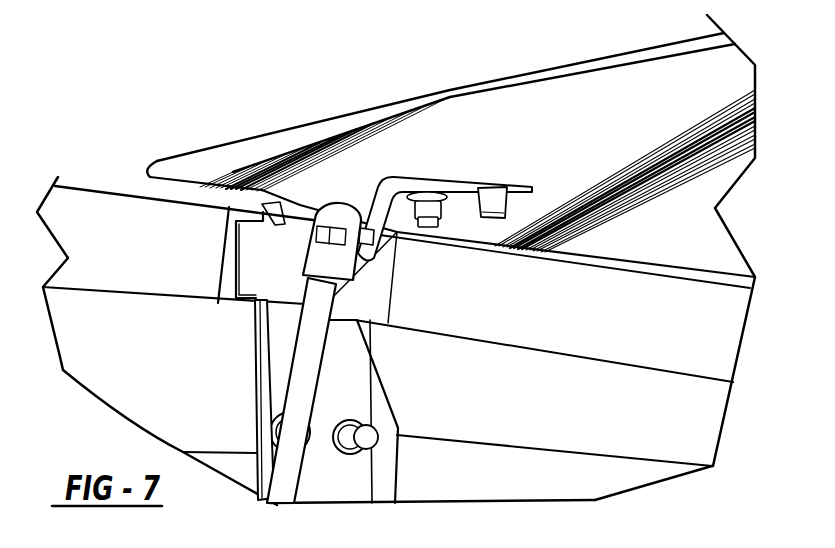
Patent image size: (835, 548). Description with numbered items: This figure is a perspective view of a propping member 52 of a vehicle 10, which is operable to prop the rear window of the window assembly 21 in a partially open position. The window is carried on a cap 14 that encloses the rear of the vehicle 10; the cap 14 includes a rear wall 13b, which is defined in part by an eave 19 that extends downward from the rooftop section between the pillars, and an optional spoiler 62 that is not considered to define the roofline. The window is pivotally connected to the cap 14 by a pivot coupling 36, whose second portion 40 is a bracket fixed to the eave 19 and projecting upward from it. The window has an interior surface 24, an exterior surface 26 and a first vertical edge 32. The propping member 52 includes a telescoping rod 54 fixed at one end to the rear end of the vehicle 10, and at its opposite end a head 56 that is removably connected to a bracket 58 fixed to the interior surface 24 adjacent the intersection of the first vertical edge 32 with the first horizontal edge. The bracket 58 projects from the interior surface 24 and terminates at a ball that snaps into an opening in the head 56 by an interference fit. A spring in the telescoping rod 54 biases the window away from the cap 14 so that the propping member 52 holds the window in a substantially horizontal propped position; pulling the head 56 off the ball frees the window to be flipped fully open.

The vehicle 10 is at (123, 91).
The window assembly 21 is at (208, 130).
The first vertical edge 32 is at (387, 105).
The exterior surface 26 is at (637, 47).
The interior surface 24 is at (612, 134).
The spoiler 62 is at (83, 213).
The head 56 is at (322, 257).
The bracket 58 is at (382, 208).
The telescoping rod 54 is at (305, 363).
The cap 14 is at (134, 327).
The pivot coupling 36 is at (282, 311).
The second portion 40 is at (280, 364).
The propping member 52 is at (322, 394).
The eave 19 is at (647, 440).
The rear wall 13b is at (498, 417).